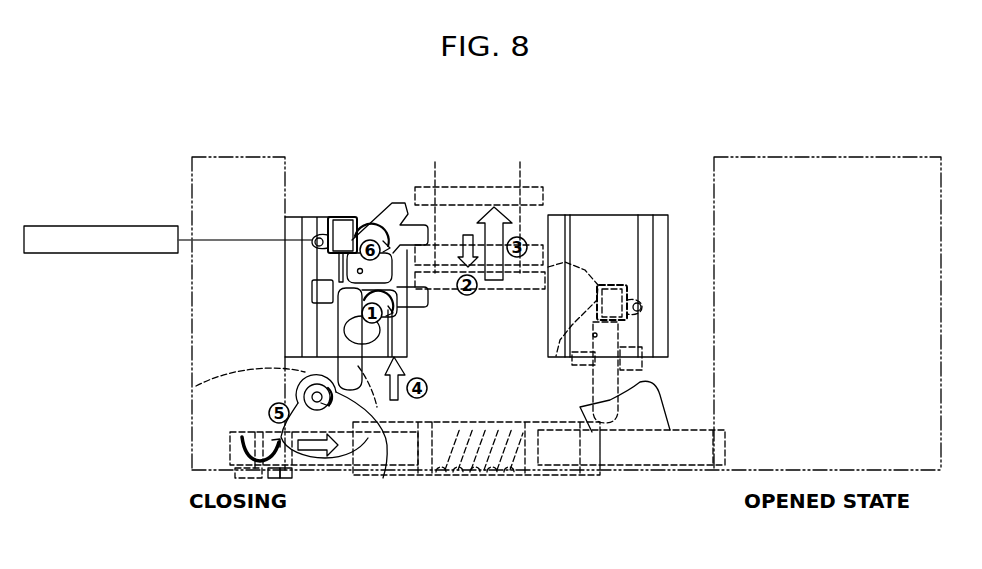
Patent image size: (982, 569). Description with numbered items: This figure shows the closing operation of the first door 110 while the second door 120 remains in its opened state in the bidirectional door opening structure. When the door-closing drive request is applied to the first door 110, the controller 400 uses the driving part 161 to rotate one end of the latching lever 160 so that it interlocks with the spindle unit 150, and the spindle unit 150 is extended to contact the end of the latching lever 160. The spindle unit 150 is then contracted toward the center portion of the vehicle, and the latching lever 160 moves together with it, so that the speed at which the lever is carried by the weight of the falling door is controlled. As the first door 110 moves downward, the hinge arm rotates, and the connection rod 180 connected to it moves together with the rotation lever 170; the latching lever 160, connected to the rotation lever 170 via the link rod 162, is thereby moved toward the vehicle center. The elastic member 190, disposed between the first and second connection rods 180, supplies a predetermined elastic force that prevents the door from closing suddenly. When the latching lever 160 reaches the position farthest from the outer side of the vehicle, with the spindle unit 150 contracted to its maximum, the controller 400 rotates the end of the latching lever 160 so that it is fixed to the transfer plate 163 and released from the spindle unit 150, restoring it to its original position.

The first door 110 is at (252, 156).
The second door 120 is at (810, 157).
The spindle unit 150 is at (468, 190).
The latching lever 160 is at (395, 210).
The driving part 161 is at (342, 230).
The link rod 162 is at (295, 370).
The transfer plate 163 is at (292, 302).
The rotation lever 170 is at (367, 412).
The connection rod 180 is at (323, 458).
The elastic member 190 is at (478, 465).
The controller 400 is at (90, 225).